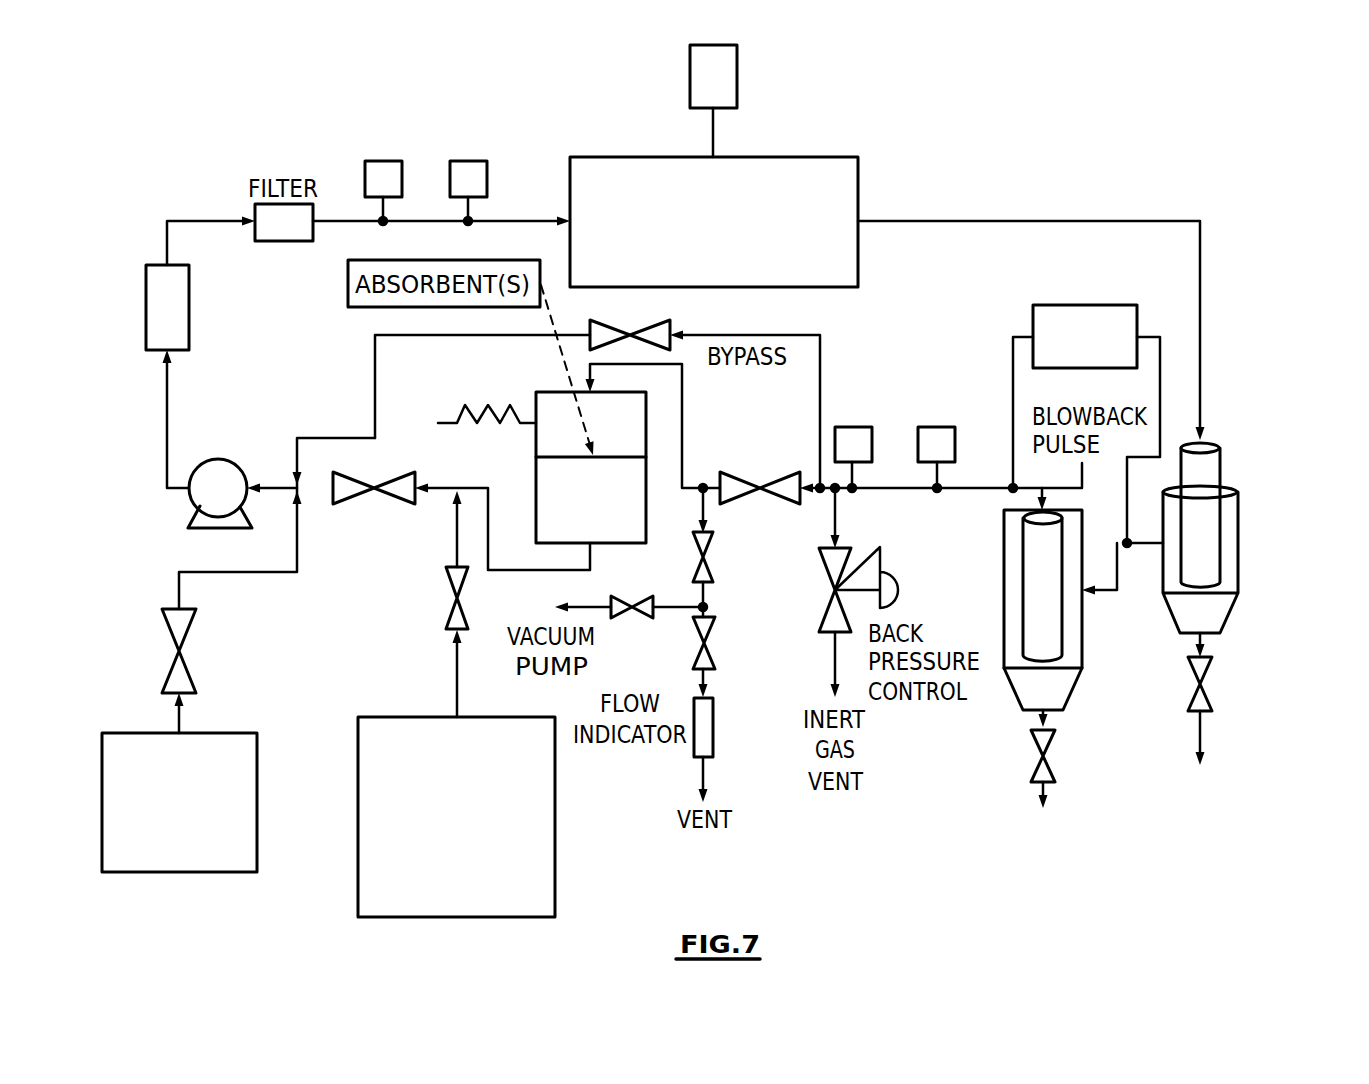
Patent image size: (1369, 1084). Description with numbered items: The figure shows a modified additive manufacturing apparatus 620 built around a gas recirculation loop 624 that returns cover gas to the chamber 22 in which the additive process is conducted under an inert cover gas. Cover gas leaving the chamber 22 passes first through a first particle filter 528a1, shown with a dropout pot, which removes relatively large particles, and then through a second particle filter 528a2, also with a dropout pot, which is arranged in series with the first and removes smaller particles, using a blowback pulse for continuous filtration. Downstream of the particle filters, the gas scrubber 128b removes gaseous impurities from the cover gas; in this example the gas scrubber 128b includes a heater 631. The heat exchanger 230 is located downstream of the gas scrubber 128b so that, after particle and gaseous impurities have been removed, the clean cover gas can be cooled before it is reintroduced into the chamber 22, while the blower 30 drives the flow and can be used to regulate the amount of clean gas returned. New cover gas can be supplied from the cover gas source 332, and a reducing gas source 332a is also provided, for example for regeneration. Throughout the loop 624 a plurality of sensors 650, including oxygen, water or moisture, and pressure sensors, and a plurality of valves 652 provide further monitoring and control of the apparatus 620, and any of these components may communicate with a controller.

The chamber 22 is at (866, 180).
The blower 30 is at (222, 459).
The gas scrubber 128b is at (536, 475).
The heat exchanger 230 is at (146, 300).
The cover gas source 332 is at (150, 733).
The reducing gas source 332a is at (435, 717).
The first particle filter 528a1 is at (1238, 535).
The second particle filter 528a2 is at (1080, 640).
The additive manufacturing apparatus 620 is at (309, 820).
The gas recirculation loop 624 is at (1222, 185).
The heater 631 is at (465, 407).
The sensors 650 is at (690, 68).
The valves 652 is at (672, 321).